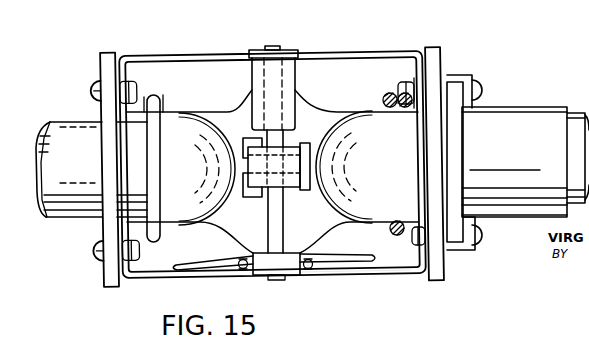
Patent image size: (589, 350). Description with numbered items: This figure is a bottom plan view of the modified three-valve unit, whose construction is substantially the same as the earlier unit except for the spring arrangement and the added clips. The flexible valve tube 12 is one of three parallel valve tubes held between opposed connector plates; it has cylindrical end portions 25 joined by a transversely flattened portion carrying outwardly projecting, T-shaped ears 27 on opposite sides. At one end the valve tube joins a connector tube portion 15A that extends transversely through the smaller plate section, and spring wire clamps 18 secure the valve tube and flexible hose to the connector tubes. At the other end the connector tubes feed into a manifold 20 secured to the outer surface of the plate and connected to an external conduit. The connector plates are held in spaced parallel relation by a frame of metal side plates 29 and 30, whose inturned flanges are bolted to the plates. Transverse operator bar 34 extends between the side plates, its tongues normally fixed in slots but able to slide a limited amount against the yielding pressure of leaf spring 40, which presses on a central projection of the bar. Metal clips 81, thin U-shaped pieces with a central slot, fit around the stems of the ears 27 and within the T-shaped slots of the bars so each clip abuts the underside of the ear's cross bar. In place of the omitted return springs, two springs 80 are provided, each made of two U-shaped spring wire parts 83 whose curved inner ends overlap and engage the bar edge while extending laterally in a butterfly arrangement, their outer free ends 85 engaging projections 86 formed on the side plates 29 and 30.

The valve tube 12 is at (213, 243).
The connector tube portion 15A is at (56, 213).
The spring wire clamp 18 is at (161, 113).
The manifold 20 is at (520, 110).
The cylindrical end portion 25 is at (208, 168).
The ear 27 is at (296, 167).
The side plate 29 is at (365, 56).
The side plate 30 is at (407, 272).
The operator bar 34 is at (281, 206).
The leaf spring 40 is at (298, 78).
The spring 80 is at (328, 242).
The metal clip 81 is at (308, 139).
The U-shaped part 83 is at (203, 268).
The outer free end 85 is at (244, 270).
The projection 86 is at (241, 261).